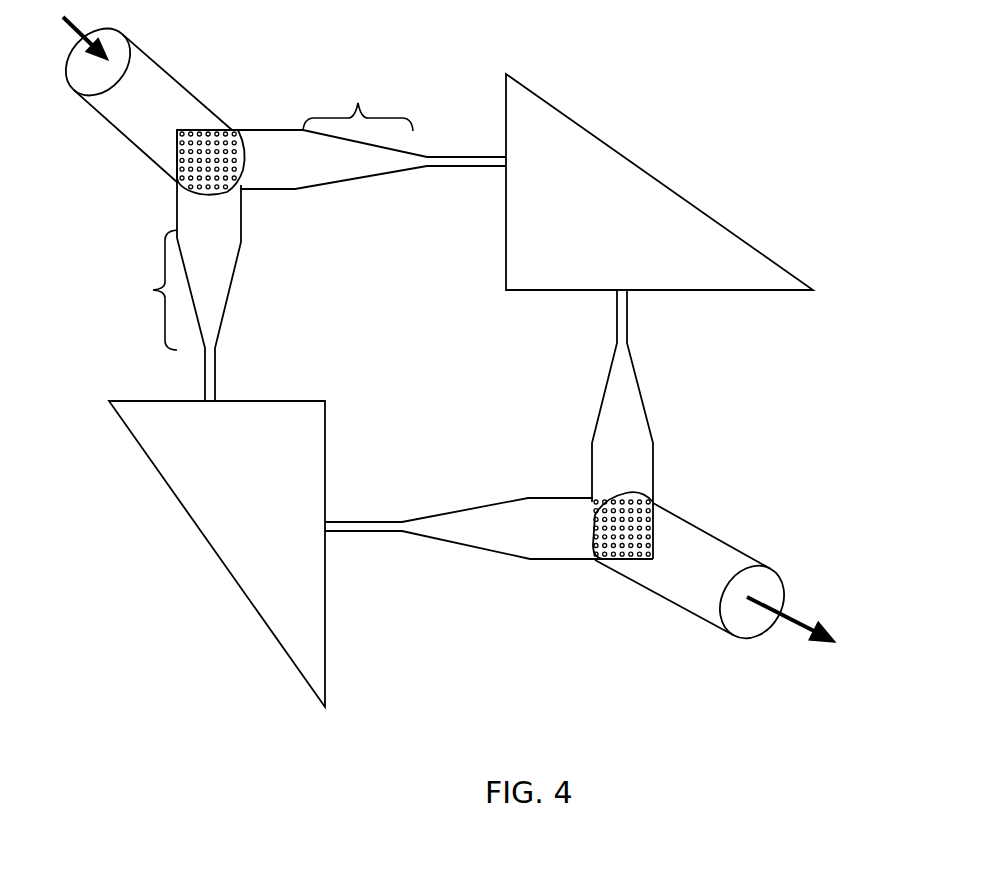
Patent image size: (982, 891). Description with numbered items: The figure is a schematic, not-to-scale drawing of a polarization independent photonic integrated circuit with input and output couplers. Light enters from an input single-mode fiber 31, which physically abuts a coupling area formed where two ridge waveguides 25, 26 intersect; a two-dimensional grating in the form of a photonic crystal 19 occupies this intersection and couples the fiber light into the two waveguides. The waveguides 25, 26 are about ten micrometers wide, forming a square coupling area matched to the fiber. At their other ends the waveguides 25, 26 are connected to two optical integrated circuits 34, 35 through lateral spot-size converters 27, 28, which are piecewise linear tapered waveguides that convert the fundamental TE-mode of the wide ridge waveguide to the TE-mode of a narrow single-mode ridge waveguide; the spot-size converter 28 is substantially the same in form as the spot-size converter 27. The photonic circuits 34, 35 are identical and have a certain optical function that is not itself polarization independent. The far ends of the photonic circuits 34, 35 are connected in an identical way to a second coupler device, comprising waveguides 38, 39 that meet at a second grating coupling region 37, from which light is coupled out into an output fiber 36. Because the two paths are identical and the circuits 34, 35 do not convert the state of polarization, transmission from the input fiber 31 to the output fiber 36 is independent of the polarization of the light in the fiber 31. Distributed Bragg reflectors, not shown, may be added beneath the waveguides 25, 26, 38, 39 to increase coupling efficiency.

The photonic crystal 19 is at (240, 192).
The ridge waveguide 25 is at (341, 159).
The ridge waveguide 26 is at (209, 265).
The lateral spot-size converter 27 is at (358, 96).
The lateral spot-size converter 28 is at (132, 290).
The single-mode fiber 31 is at (142, 99).
The photonic circuit 34 is at (659, 182).
The photonic circuit 35 is at (217, 554).
The output fiber 36 is at (715, 576).
The coupling region 37 is at (596, 502).
The waveguide 38 is at (489, 528).
The waveguide 39 is at (622, 424).